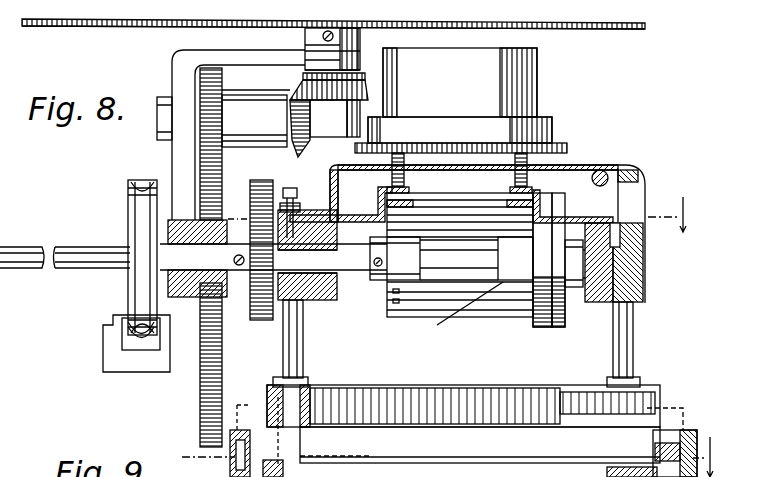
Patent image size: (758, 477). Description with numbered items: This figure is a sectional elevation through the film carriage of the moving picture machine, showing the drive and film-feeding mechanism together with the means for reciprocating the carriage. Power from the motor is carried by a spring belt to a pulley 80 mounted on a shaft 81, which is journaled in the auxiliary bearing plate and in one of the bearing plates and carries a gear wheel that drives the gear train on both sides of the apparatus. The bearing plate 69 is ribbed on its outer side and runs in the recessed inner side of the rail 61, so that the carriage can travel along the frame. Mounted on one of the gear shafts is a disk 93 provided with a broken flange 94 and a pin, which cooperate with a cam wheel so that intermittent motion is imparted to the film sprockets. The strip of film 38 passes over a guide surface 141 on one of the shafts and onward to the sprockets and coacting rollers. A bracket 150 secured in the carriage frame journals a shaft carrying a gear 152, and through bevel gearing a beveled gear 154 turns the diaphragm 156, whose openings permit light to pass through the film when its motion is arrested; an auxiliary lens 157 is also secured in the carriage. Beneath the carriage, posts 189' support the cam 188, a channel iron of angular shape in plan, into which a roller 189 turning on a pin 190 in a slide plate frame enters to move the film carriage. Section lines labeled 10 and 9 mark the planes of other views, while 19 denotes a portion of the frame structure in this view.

The diaphragm 156 is at (478, 26).
The beveled gear 154 is at (296, 90).
The bracket 150 is at (363, 50).
The auxiliary lens 157 is at (532, 98).
The section line 10 is at (478, 215).
The pulley 80 is at (140, 183).
The shaft 81 is at (234, 300).
The gear 152 is at (310, 152).
The strip of film 38 is at (480, 186).
The guide surface 141 is at (408, 278).
The broken flange 94 is at (527, 325).
The disk 93 is at (554, 330).
The bearing plate 69 is at (573, 302).
The rail 61 is at (640, 286).
The posts 189' is at (494, 343).
The rail 19 is at (446, 392).
The roller 189 is at (321, 418).
The pin 190 is at (359, 457).
The cam 188 is at (517, 428).
The section line 9 is at (452, 457).